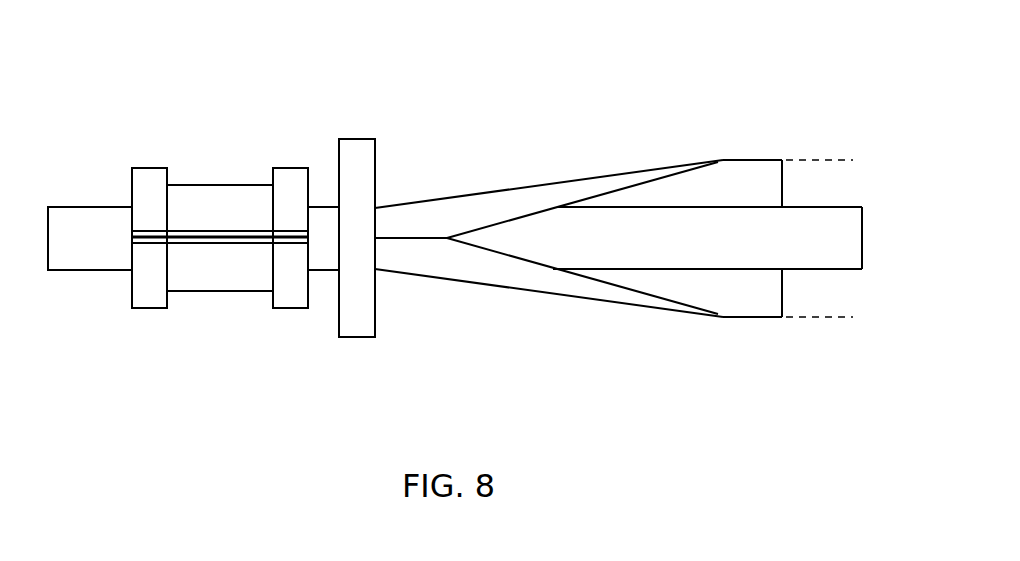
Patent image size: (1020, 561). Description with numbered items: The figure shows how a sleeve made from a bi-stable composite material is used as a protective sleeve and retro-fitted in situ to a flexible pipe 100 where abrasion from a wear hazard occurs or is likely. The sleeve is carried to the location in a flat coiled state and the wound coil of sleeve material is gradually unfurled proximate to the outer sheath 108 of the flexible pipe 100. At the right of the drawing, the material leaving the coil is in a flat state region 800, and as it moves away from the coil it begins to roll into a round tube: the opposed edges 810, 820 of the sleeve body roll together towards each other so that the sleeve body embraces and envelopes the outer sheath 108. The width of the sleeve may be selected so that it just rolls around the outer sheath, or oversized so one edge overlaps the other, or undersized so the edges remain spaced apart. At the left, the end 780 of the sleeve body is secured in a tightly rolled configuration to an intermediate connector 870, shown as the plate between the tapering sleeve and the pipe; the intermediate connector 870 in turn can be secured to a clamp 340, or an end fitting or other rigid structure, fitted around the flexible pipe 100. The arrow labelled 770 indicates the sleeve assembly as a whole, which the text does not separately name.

The flexible pipe 100 is at (97, 257).
The clamp 340 is at (208, 207).
The intermediate connector 870 is at (360, 325).
The end of the sleeve body 780 is at (423, 165).
The splitter 770 is at (623, 140).
The opposed edge of the sleeve body 810 is at (675, 177).
The opposed edge of the sleeve body 820 is at (648, 295).
The flat state region 800 is at (752, 175).
The outer sheath 108 is at (840, 255).